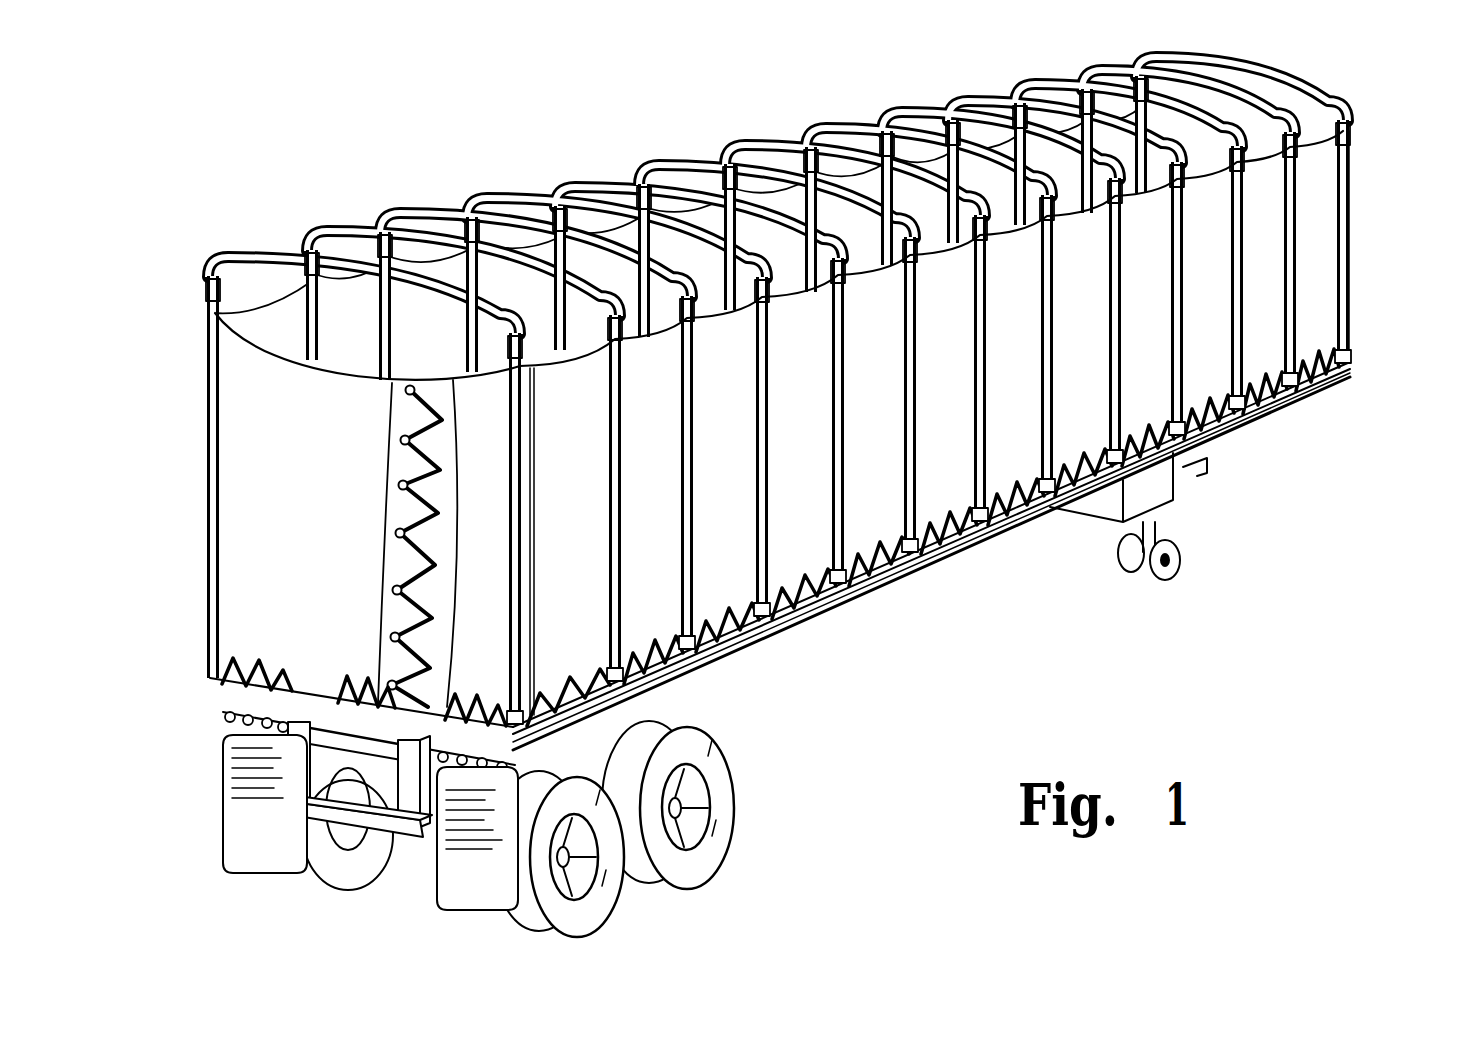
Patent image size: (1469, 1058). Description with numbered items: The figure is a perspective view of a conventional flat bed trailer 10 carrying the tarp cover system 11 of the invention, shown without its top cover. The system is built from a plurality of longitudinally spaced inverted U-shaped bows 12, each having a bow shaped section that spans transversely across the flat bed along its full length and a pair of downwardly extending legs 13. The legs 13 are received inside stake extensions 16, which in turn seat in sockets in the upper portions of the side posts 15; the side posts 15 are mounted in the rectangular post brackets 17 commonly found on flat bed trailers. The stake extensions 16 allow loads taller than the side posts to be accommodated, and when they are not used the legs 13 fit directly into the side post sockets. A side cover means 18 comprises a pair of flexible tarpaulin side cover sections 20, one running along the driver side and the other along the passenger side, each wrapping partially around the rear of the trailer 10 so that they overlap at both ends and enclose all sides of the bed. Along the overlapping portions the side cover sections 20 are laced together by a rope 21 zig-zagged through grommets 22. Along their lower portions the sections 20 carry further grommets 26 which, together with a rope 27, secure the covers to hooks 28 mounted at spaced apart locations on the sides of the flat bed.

The flat bed trailer 10 is at (773, 652).
The tarp cover system 11 is at (700, 134).
The inverted U-shaped bows 12 is at (560, 186).
The legs 13 is at (213, 262).
The side posts 15 is at (607, 505).
The stake extensions 16 is at (224, 312).
The post brackets 17 is at (633, 670).
The side cover means 18 is at (201, 433).
The side cover sections 20 is at (245, 558).
The rope 21 is at (686, 400).
The grommets 22 is at (398, 545).
The grommets 26 is at (593, 688).
The rope 27 is at (737, 627).
The hooks 28 is at (645, 693).